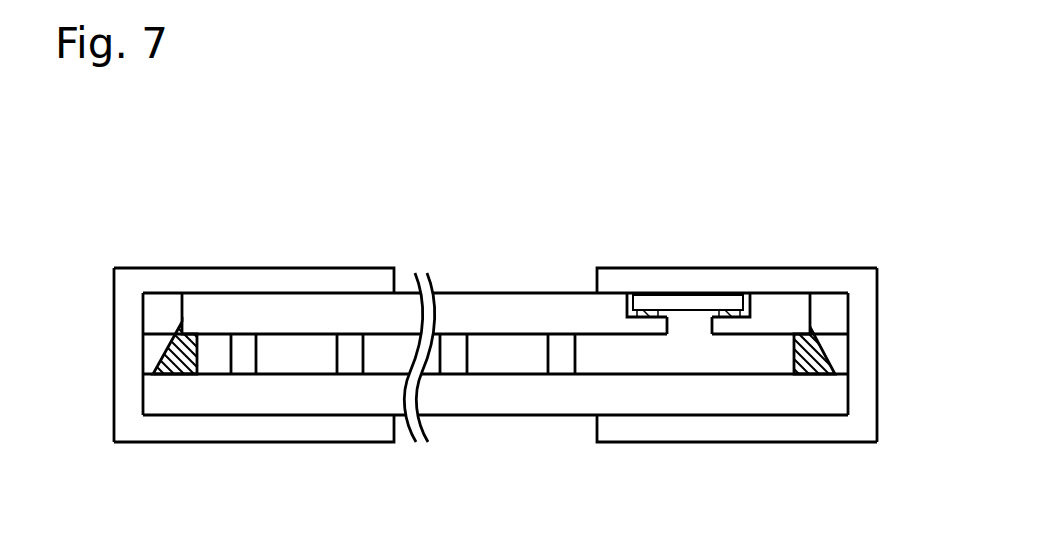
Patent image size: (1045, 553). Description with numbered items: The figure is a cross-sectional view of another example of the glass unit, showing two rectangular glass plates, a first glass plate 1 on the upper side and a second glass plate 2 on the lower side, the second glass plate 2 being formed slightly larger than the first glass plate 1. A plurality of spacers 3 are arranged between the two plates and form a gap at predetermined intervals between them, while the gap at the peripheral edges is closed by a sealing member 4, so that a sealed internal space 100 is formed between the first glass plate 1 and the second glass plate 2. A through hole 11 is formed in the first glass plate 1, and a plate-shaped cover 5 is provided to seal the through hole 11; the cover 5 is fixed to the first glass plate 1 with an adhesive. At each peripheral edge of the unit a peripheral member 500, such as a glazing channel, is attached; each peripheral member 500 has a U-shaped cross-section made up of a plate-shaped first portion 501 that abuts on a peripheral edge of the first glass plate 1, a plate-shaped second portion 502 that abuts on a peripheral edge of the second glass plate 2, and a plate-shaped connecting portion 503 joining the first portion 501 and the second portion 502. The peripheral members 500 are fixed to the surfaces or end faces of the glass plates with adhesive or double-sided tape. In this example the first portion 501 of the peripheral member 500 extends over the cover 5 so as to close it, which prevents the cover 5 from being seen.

The first glass plate 1 is at (305, 305).
The second glass plate 2 is at (483, 403).
The spacers 3 is at (349, 357).
The sealing member 4 is at (172, 352).
The cover 5 is at (695, 305).
The through hole 11 is at (693, 334).
The internal space 100 is at (521, 366).
The peripheral member 500 is at (490, 365).
The first portion 501 is at (820, 280).
The second portion 502 is at (738, 435).
The connecting portion 503 is at (868, 353).